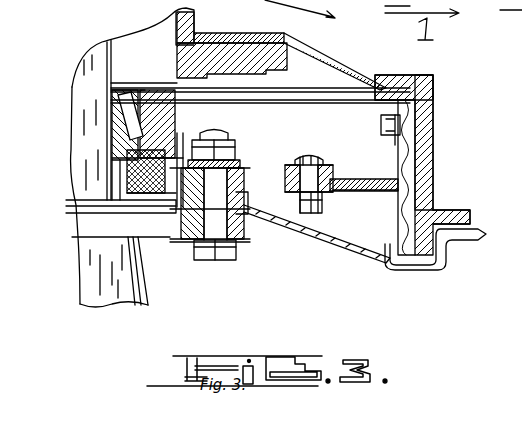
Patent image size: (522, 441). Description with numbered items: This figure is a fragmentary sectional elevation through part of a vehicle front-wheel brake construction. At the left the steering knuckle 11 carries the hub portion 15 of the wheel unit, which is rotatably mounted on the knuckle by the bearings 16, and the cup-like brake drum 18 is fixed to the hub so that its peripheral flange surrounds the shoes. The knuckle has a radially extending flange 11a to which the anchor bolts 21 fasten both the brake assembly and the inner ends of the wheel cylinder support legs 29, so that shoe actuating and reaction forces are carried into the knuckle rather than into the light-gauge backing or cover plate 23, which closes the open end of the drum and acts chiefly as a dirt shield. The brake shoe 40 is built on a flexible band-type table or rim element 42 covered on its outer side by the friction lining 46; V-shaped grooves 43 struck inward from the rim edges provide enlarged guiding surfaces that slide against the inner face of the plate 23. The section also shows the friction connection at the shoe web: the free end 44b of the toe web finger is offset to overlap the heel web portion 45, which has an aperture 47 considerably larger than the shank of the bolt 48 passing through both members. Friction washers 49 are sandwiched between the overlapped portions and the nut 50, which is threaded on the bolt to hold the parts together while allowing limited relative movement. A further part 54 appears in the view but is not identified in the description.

The steering knuckle 11 is at (82, 278).
The radially extending flange 11a is at (209, 268).
The hub portion 15 is at (181, 18).
The bearings 16 is at (110, 120).
The brake drum 18 is at (352, 44).
The anchor bolts 21 is at (228, 262).
The backing or cover plate 23 is at (318, 270).
The support legs 29 is at (243, 206).
The brake shoe 40 is at (433, 168).
The table or rim element 42 is at (393, 133).
The V-shaped grooves 43 is at (431, 103).
The free end of toe web finger 44b is at (294, 162).
The heel web portion 45 is at (338, 196).
The friction lining 46 is at (437, 193).
The aperture 47 is at (333, 167).
The bolt 48 is at (318, 158).
The friction washers 49 is at (288, 173).
The nut 50 is at (299, 197).
The nut 54 is at (197, 140).